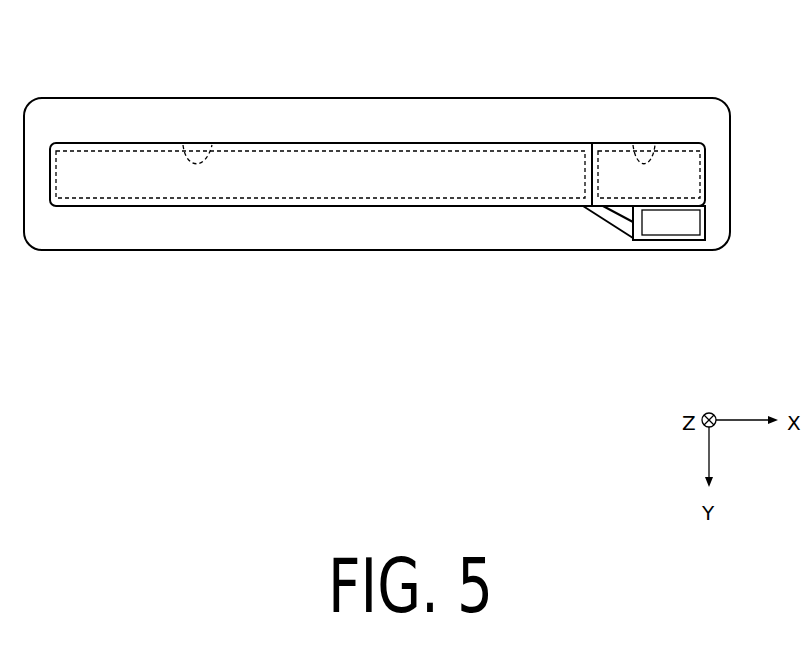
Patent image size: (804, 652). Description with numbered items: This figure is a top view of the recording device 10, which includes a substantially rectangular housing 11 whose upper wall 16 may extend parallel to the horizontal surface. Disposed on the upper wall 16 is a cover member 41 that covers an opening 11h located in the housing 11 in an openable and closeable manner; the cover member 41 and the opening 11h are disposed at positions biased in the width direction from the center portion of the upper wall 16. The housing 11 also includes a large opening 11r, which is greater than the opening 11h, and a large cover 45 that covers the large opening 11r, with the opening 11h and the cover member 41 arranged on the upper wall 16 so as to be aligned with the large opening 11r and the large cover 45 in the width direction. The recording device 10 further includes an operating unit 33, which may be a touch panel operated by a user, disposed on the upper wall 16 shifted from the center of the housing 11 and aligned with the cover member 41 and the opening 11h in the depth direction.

The recording device 10 is at (711, 66).
The housing 11 is at (713, 97).
The large opening 11r is at (212, 143).
The opening 11h is at (654, 143).
The upper wall 16 is at (373, 115).
The large cover 45 is at (260, 143).
The cover member 41 is at (611, 143).
The operating unit 33 is at (693, 222).